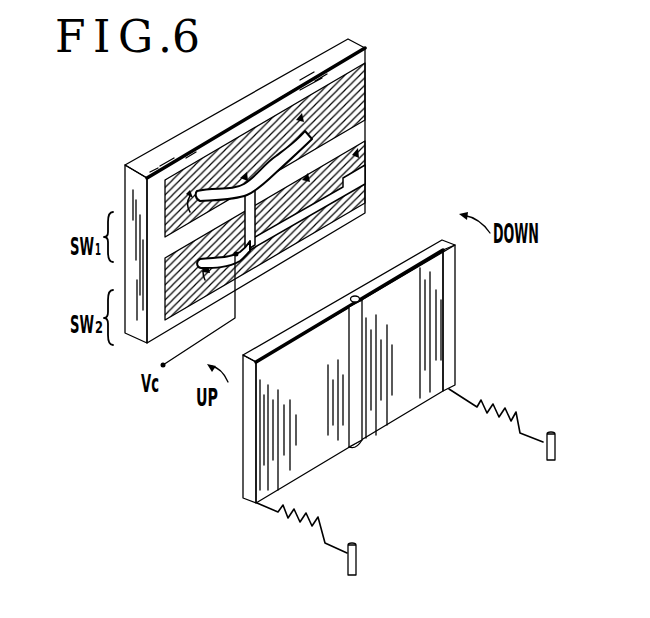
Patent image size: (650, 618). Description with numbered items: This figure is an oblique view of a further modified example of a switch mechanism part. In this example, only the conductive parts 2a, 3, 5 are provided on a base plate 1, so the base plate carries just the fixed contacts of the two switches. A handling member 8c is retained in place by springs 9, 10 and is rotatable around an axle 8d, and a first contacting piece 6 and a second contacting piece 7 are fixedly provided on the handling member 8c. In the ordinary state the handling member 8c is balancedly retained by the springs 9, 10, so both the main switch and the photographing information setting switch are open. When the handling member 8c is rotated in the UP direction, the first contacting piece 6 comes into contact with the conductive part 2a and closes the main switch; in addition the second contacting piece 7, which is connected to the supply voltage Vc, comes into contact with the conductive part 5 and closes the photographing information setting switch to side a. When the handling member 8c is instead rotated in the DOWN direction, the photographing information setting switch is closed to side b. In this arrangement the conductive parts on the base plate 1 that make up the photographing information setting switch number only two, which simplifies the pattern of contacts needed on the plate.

The base plate 1 is at (313, 58).
The conductive part 2a is at (357, 117).
The conductive part 3 is at (352, 165).
The conductive part 5 is at (348, 203).
The first contacting piece 6 is at (223, 187).
The second contacting piece 7 is at (236, 256).
The handling member 8c is at (443, 333).
The axle 8d is at (355, 295).
The spring 9 is at (505, 432).
The spring 10 is at (310, 540).